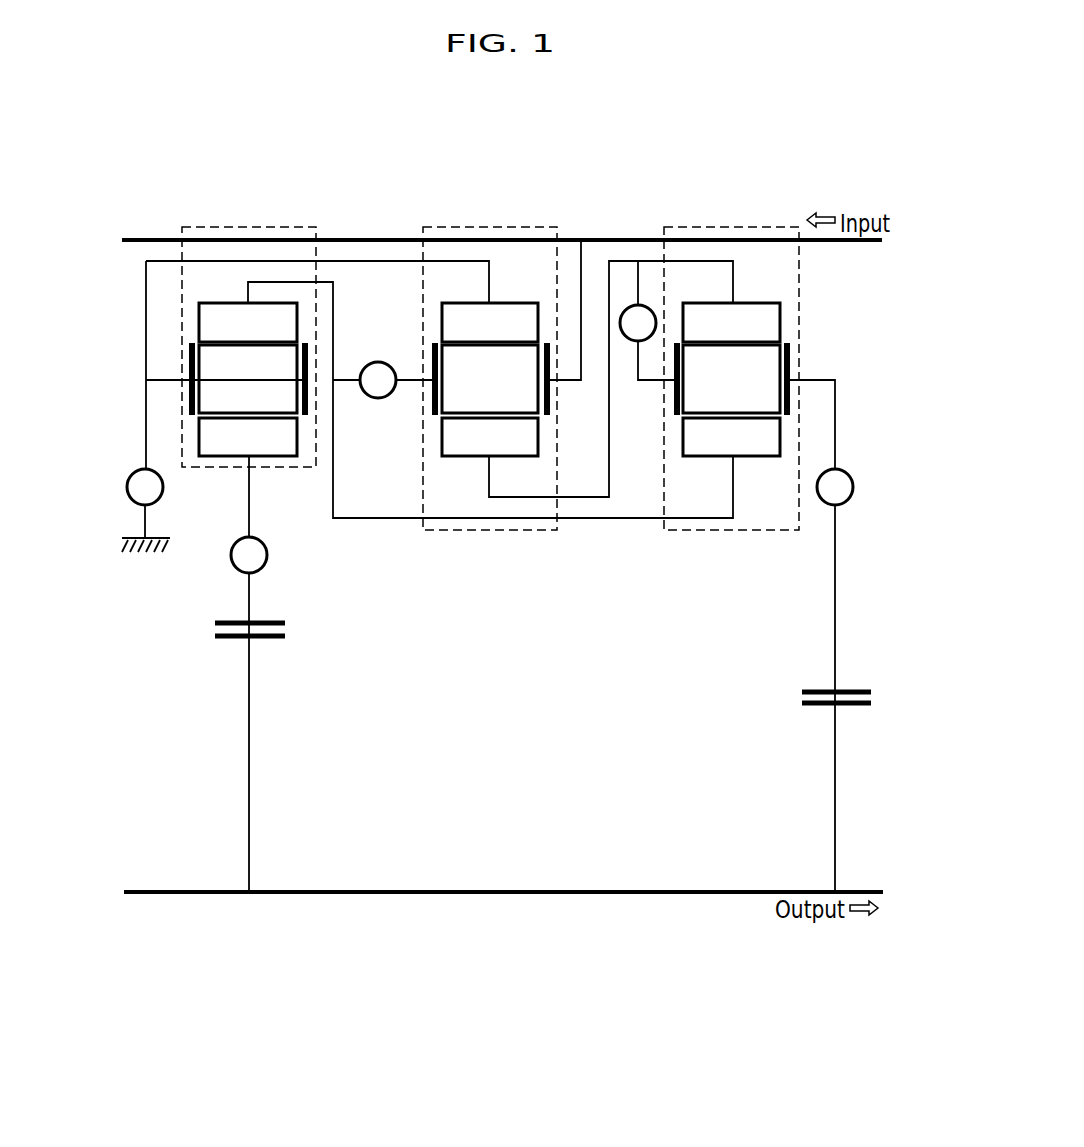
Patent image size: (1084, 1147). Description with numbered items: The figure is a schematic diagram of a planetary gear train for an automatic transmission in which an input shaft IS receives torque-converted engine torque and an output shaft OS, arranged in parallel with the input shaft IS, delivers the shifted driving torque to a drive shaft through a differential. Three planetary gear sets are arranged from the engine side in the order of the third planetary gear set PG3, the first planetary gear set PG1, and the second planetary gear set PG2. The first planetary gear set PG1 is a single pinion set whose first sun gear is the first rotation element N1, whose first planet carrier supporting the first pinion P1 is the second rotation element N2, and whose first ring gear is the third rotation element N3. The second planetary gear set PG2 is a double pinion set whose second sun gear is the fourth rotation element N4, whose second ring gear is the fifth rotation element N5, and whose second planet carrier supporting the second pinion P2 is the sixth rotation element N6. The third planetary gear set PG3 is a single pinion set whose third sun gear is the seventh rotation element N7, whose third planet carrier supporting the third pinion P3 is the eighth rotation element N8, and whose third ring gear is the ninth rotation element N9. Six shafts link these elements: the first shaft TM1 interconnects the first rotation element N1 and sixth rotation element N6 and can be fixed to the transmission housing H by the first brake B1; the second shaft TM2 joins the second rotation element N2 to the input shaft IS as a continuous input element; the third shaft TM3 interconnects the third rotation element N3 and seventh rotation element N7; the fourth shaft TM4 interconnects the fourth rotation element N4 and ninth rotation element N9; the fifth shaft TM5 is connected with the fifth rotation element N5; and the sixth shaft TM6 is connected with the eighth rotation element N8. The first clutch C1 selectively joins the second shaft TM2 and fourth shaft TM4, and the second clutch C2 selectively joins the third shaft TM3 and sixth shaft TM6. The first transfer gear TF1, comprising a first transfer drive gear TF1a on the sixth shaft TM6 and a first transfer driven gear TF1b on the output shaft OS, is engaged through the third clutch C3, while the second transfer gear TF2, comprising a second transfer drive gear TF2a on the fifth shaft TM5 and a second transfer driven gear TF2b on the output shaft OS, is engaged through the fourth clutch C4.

The input shaft IS is at (640, 238).
The output shaft OS is at (505, 894).
The first planetary gear set PG1 is at (489, 216).
The second planetary gear set PG2 is at (248, 216).
The third planetary gear set PG3 is at (733, 216).
The first rotation element N1 is at (490, 322).
The second rotation element N2 is at (551, 400).
The third rotation element N3 is at (490, 437).
The fourth rotation element N4 is at (248, 322).
The fifth rotation element N5 is at (248, 437).
The sixth rotation element N6 is at (308, 357).
The seventh rotation element N7 is at (731, 322).
The eighth rotation element N8 is at (678, 416).
The ninth rotation element N9 is at (731, 437).
The first pinion P1 is at (491, 379).
The second pinion P2 is at (248, 379).
The third pinion P3 is at (732, 379).
The first shaft TM1 is at (360, 246).
The second shaft TM2 is at (584, 268).
The third shaft TM3 is at (591, 511).
The fourth shaft TM4 is at (395, 532).
The fifth shaft TM5 is at (260, 508).
The sixth shaft TM6 is at (843, 396).
The first clutch C1 is at (397, 380).
The second clutch C2 is at (648, 320).
The third clutch C3 is at (835, 680).
The fourth clutch C4 is at (249, 714).
The first brake B1 is at (146, 510).
The transmission housing H is at (147, 553).
The first transfer gear TF1 is at (776, 695).
The first transfer drive gear TF1a is at (802, 693).
The first transfer driven gear TF1b is at (802, 702).
The second transfer gear TF2 is at (306, 628).
The second transfer drive gear TF2a is at (285, 623).
The second transfer driven gear TF2b is at (285, 636).